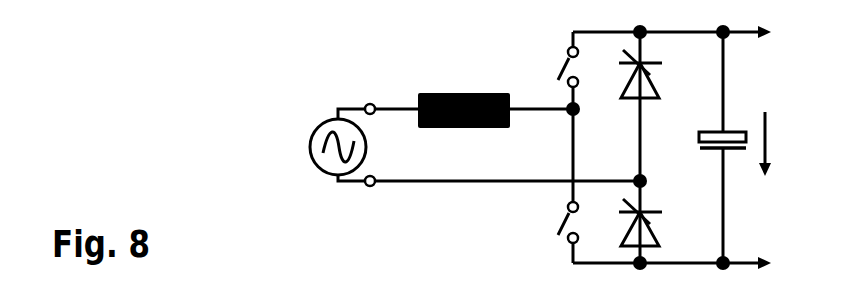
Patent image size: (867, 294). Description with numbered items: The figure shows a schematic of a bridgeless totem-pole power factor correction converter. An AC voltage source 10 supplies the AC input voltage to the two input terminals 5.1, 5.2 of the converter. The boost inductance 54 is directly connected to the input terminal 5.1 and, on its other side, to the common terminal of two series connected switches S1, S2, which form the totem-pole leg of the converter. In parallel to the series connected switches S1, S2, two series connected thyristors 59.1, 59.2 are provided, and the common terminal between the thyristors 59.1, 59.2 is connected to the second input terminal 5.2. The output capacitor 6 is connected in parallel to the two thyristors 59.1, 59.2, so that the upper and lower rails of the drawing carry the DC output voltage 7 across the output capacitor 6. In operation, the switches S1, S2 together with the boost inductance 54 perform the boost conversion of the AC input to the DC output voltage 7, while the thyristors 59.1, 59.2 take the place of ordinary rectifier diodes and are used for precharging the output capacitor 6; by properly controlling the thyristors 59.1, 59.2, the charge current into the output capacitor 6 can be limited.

The voltage source 10 is at (322, 118).
The input terminal 5.1 is at (364, 103).
The input terminal 5.2 is at (364, 187).
The boost inductance 54 is at (472, 92).
The switch S1 is at (562, 77).
The switch S2 is at (563, 227).
The thyristor 59.1 is at (653, 80).
The thyristor 59.2 is at (660, 232).
The output capacitor 6 is at (727, 133).
The output voltage 7 is at (768, 132).